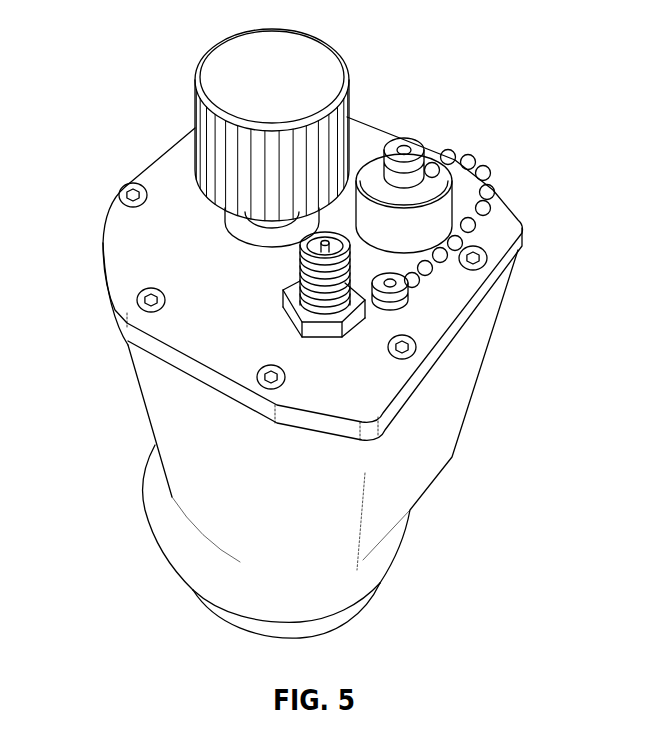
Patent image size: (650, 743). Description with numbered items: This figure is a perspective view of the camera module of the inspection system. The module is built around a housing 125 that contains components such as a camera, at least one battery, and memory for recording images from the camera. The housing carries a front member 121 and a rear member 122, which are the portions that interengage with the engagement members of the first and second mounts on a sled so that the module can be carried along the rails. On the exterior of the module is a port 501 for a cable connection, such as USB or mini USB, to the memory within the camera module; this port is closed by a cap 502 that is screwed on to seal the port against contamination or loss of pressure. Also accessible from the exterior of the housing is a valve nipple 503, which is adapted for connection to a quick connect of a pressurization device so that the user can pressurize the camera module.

The front member 121 is at (123, 250).
The rear member 122 is at (218, 68).
The housing 125 is at (153, 427).
The port 501 is at (413, 220).
The cap 502 is at (450, 190).
The valve nipple 503 is at (395, 300).